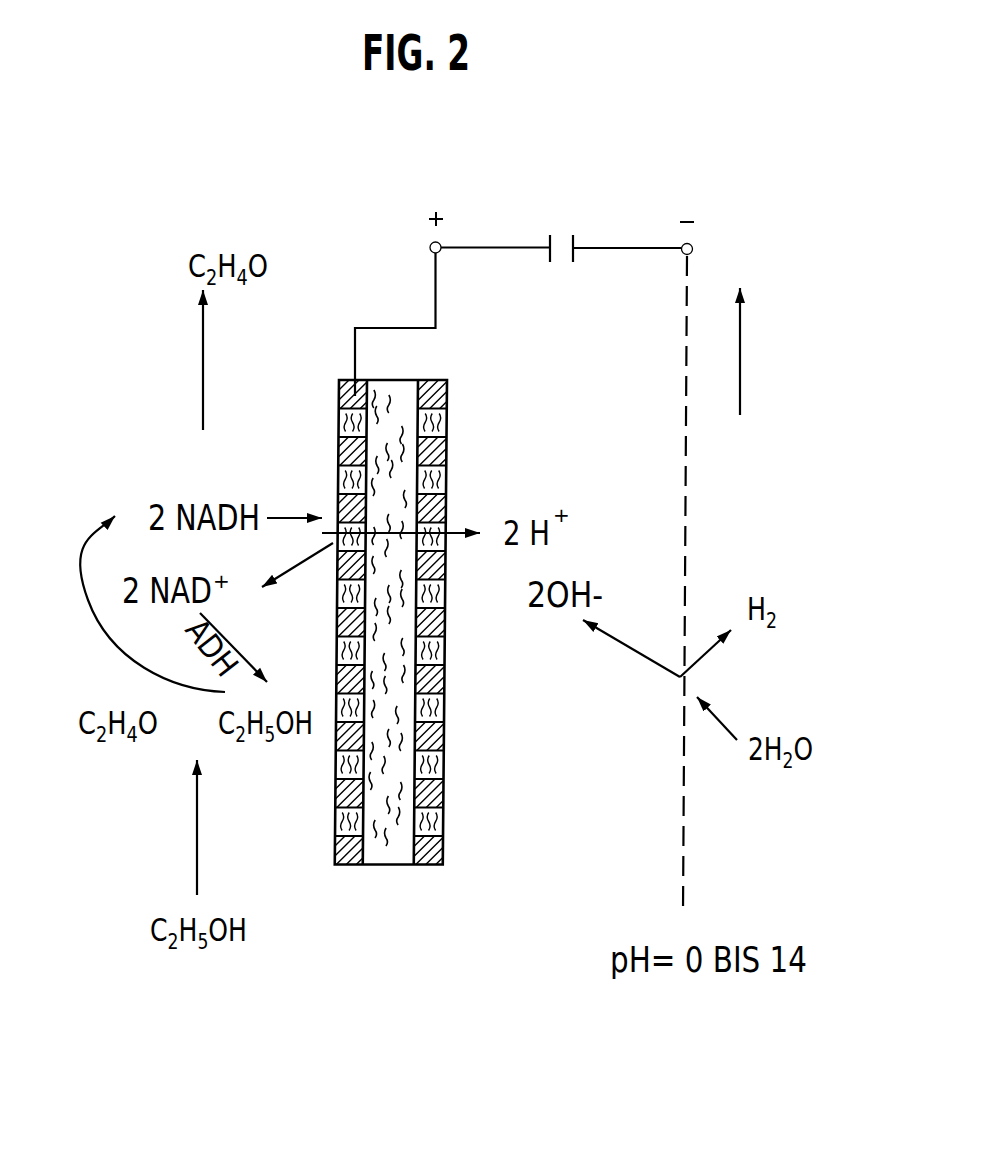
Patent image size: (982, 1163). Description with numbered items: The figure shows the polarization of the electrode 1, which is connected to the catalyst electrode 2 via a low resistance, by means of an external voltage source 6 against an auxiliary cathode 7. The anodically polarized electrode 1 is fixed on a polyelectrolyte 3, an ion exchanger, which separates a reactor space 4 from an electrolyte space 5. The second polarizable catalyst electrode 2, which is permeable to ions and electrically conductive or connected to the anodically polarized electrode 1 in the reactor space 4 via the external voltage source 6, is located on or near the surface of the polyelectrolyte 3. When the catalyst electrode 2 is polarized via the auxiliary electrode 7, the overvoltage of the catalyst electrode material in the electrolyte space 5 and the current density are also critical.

The electrode 1 is at (356, 396).
The catalyst electrode 2 is at (430, 424).
The polyelectrolyte 3 is at (405, 483).
The reactor space 4 is at (294, 620).
The electrolyte space 5 is at (464, 748).
The external voltage source 6 is at (560, 241).
The auxiliary cathode 7 is at (686, 814).